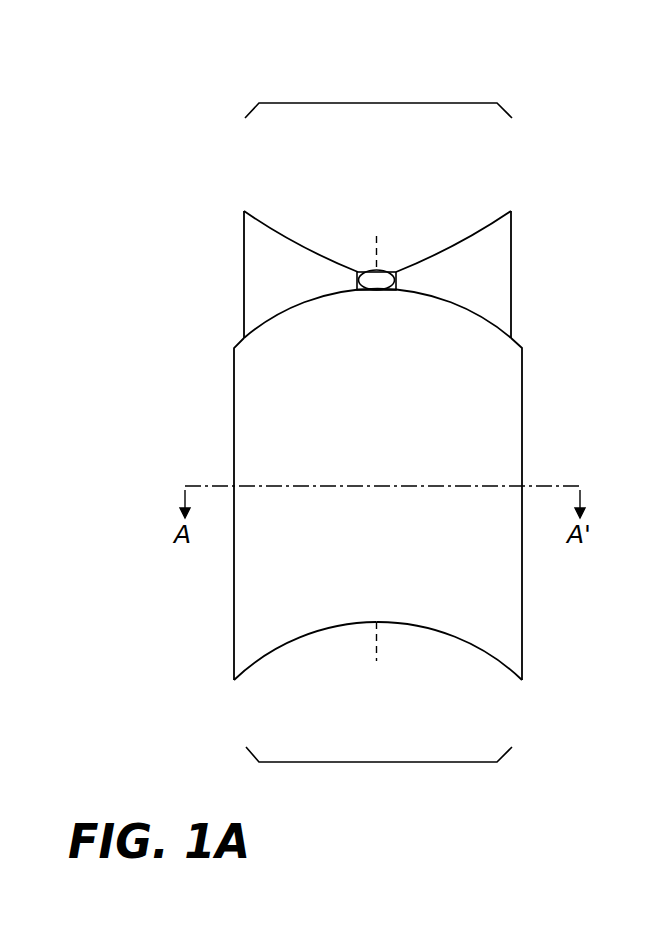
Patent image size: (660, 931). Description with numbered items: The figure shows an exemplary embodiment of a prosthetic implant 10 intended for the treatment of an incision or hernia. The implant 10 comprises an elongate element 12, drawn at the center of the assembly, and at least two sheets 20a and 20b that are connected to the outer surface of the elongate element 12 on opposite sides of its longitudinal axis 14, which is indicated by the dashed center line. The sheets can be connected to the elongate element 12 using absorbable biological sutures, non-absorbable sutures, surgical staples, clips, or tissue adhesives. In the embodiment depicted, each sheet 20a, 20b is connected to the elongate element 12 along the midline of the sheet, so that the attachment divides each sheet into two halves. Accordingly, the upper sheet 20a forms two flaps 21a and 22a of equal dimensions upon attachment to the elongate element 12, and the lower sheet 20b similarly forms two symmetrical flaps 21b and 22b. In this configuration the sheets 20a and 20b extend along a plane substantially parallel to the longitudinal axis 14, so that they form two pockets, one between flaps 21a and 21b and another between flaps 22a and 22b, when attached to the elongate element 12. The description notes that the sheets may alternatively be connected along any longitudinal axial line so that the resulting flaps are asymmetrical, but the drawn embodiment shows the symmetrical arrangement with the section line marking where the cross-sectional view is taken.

The prosthetic implant 10 is at (170, 328).
The elongate element 12 is at (367, 277).
The longitudinal axis 14 is at (378, 257).
The sheet 20a is at (381, 103).
The sheet 20b is at (383, 763).
The flap 21a is at (251, 218).
The flap 22a is at (508, 215).
The flap 21b is at (266, 657).
The flap 22b is at (490, 657).